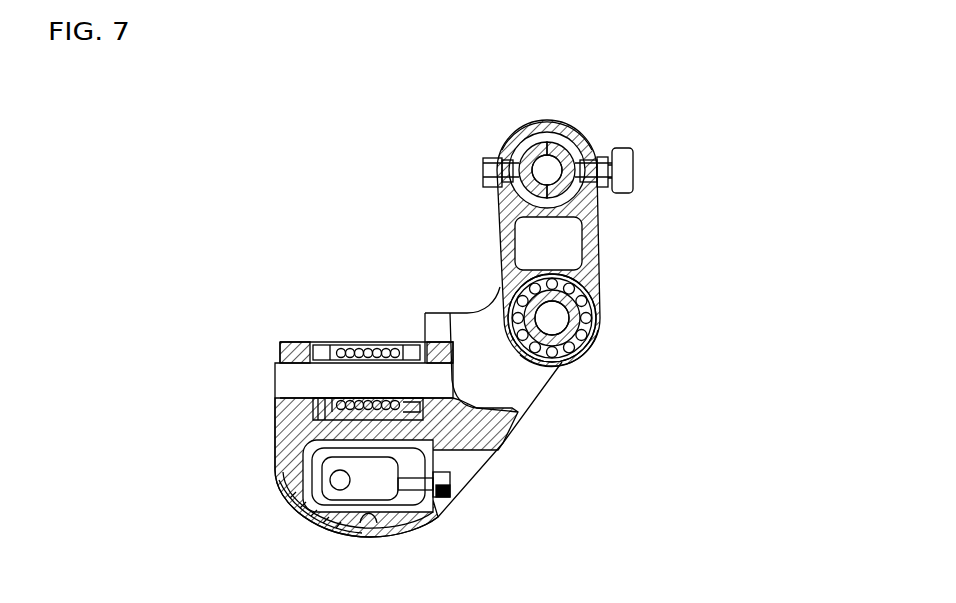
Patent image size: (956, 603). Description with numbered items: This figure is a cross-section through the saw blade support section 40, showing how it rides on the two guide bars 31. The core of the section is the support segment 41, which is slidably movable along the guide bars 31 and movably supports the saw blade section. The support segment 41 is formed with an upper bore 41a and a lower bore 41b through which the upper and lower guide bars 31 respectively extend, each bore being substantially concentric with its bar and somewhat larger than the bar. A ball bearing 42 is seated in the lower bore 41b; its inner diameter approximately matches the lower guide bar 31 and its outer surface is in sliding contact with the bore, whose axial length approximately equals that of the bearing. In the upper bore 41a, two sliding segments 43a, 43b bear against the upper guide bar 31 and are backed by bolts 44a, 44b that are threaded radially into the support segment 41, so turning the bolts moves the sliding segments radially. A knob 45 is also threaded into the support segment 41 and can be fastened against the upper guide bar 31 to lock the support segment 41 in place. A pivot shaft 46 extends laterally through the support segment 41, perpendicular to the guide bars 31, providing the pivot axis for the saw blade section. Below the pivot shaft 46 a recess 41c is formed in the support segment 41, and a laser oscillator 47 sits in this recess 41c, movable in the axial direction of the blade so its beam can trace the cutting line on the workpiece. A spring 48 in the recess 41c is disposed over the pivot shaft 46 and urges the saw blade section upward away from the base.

The saw blade support section 40 is at (702, 149).
The support segment 41 is at (503, 222).
The upper bore 41a is at (550, 137).
The lower bore 41b is at (600, 320).
The recess 41c is at (322, 523).
The ball bearing 42 is at (595, 350).
The sliding segment 43a is at (573, 145).
The sliding segment 43b is at (518, 153).
The bolt 44a is at (603, 147).
The bolt 44b is at (497, 158).
The knob 45 is at (627, 172).
The pivot shaft 46 is at (278, 378).
The laser oscillator 47 is at (383, 487).
The spring 48 is at (357, 343).
The guide bar 31 is at (597, 207).